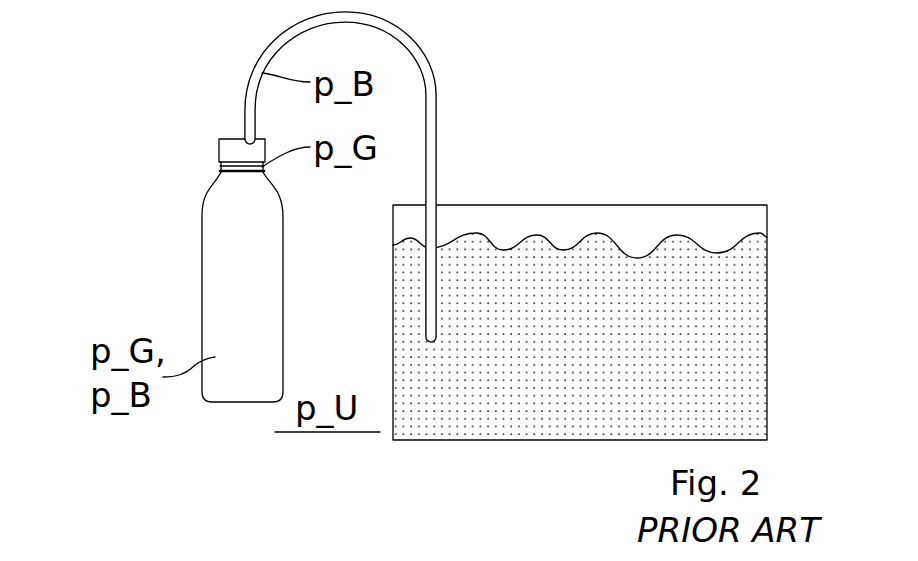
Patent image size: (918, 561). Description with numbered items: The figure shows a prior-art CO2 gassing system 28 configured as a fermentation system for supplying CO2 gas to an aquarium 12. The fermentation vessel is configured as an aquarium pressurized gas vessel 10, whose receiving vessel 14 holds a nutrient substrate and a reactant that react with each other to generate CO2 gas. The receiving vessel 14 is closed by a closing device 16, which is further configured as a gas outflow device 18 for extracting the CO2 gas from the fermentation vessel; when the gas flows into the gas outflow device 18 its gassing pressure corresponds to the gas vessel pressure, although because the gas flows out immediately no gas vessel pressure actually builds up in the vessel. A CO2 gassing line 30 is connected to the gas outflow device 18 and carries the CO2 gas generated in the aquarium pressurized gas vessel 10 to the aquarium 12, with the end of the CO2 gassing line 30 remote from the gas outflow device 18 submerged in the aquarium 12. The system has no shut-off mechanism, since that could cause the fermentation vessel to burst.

The aquarium pressurized gas vessel 10 is at (200, 259).
The aquarium 12 is at (663, 287).
The receiving vessel 14 is at (237, 230).
The closing device 16 is at (212, 101).
The gas outflow device 18 is at (238, 150).
The CO2 gassing system 28 is at (493, 153).
The CO2 gassing line 30 is at (433, 82).